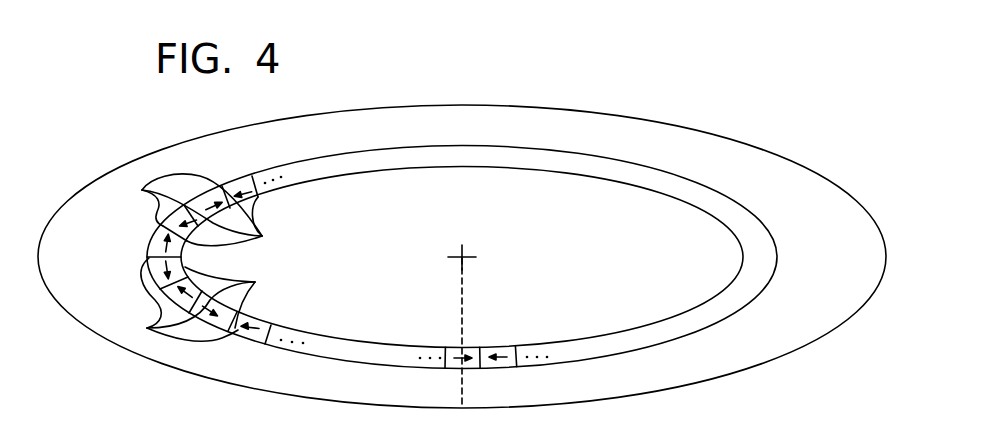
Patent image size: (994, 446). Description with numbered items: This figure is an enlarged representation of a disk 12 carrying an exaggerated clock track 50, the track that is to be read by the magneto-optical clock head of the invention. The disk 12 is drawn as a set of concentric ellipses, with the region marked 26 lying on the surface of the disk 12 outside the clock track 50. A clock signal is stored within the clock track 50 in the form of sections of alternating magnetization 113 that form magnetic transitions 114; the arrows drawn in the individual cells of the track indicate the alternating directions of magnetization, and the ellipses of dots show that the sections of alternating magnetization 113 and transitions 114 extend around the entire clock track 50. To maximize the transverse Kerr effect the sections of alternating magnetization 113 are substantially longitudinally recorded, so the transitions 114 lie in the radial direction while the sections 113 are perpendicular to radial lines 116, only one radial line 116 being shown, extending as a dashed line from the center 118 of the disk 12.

The disk 12 is at (652, 137).
The clock track 50 is at (525, 158).
The disc surface 26 is at (820, 302).
The sections of alternating magnetization 113 is at (255, 282).
The magnetic transitions 114 is at (142, 190).
The radial line 116 is at (463, 322).
The center 118 is at (464, 256).